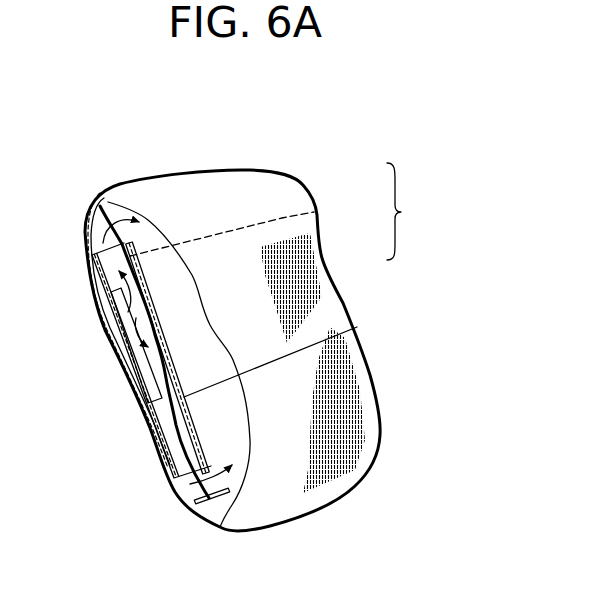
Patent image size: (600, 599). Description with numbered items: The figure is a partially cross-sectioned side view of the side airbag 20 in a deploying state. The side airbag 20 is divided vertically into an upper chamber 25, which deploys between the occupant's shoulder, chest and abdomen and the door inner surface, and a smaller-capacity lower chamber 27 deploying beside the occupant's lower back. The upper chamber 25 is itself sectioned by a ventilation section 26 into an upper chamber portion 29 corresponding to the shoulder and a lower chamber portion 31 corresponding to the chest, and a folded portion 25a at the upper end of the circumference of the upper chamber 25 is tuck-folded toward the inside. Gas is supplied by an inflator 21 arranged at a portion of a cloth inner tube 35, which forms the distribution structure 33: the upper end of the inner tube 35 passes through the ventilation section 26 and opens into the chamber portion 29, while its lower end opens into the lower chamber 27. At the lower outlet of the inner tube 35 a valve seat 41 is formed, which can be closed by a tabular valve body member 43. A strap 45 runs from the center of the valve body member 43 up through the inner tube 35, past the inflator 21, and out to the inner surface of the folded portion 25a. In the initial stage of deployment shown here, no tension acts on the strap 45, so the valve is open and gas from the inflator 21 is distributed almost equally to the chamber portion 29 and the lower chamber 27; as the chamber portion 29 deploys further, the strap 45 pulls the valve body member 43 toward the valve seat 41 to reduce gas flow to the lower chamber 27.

The side airbag 20 is at (241, 166).
The folded portion 25a is at (143, 178).
The ventilation section 26 is at (282, 218).
The chamber portion 29 is at (302, 202).
The chamber portion 31 is at (327, 267).
The upper chamber 25 is at (412, 211).
The lower chamber 27 is at (370, 373).
The inflator 21 is at (118, 348).
The distribution structure 33 is at (160, 457).
The inner tube 35 is at (155, 420).
The valve seat 41 is at (210, 470).
The valve body member 43 is at (236, 508).
The strap 45 is at (170, 377).